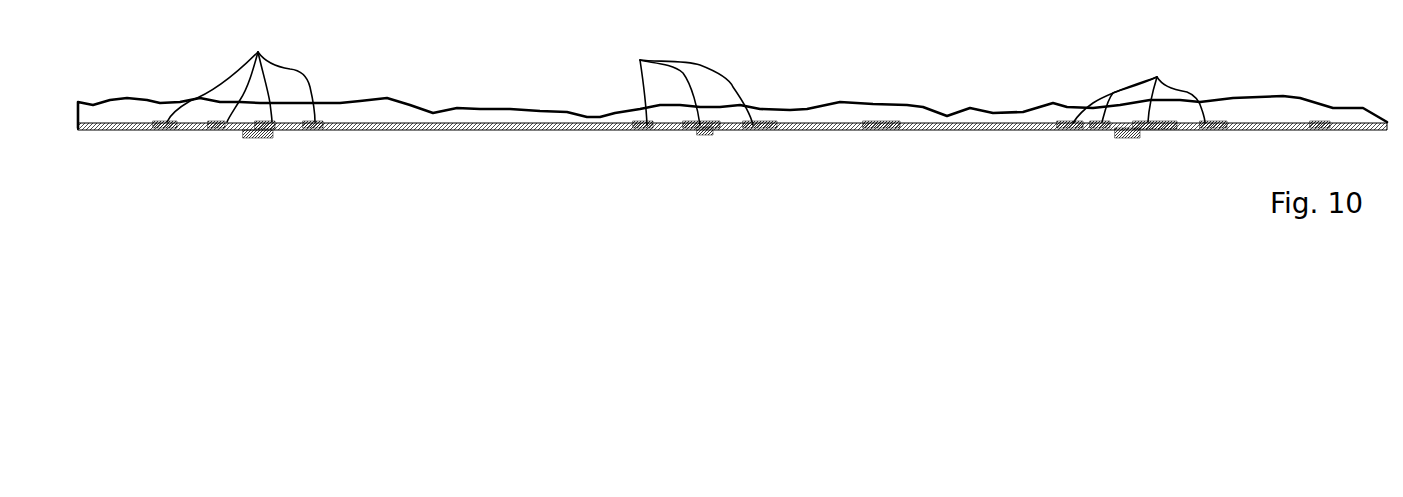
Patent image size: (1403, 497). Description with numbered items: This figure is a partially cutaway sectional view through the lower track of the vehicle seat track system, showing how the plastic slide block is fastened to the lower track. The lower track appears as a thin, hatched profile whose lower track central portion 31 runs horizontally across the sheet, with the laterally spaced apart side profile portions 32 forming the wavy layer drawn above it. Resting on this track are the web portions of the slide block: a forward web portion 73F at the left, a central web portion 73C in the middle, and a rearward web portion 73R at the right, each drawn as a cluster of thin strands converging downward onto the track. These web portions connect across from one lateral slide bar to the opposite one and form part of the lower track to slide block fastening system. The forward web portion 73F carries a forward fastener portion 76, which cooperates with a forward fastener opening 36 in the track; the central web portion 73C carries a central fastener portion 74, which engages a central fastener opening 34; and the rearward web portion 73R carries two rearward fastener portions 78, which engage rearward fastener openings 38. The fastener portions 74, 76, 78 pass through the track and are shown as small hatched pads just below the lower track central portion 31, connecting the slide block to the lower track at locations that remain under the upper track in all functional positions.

The lower track central portion 31 is at (897, 128).
The side profile portion 32 is at (513, 116).
The central fastener opening 34 is at (715, 131).
The forward fastener opening 36 is at (300, 132).
The rearward fastener opening 38 is at (1160, 130).
The forward web portion 73F is at (263, 46).
The central web portion 73C is at (640, 60).
The rearward web portion 73R is at (1157, 77).
The central fastener portion 74 is at (697, 136).
The forward fastener portion 76 is at (263, 137).
The rearward fastener portion 78 is at (1131, 133).